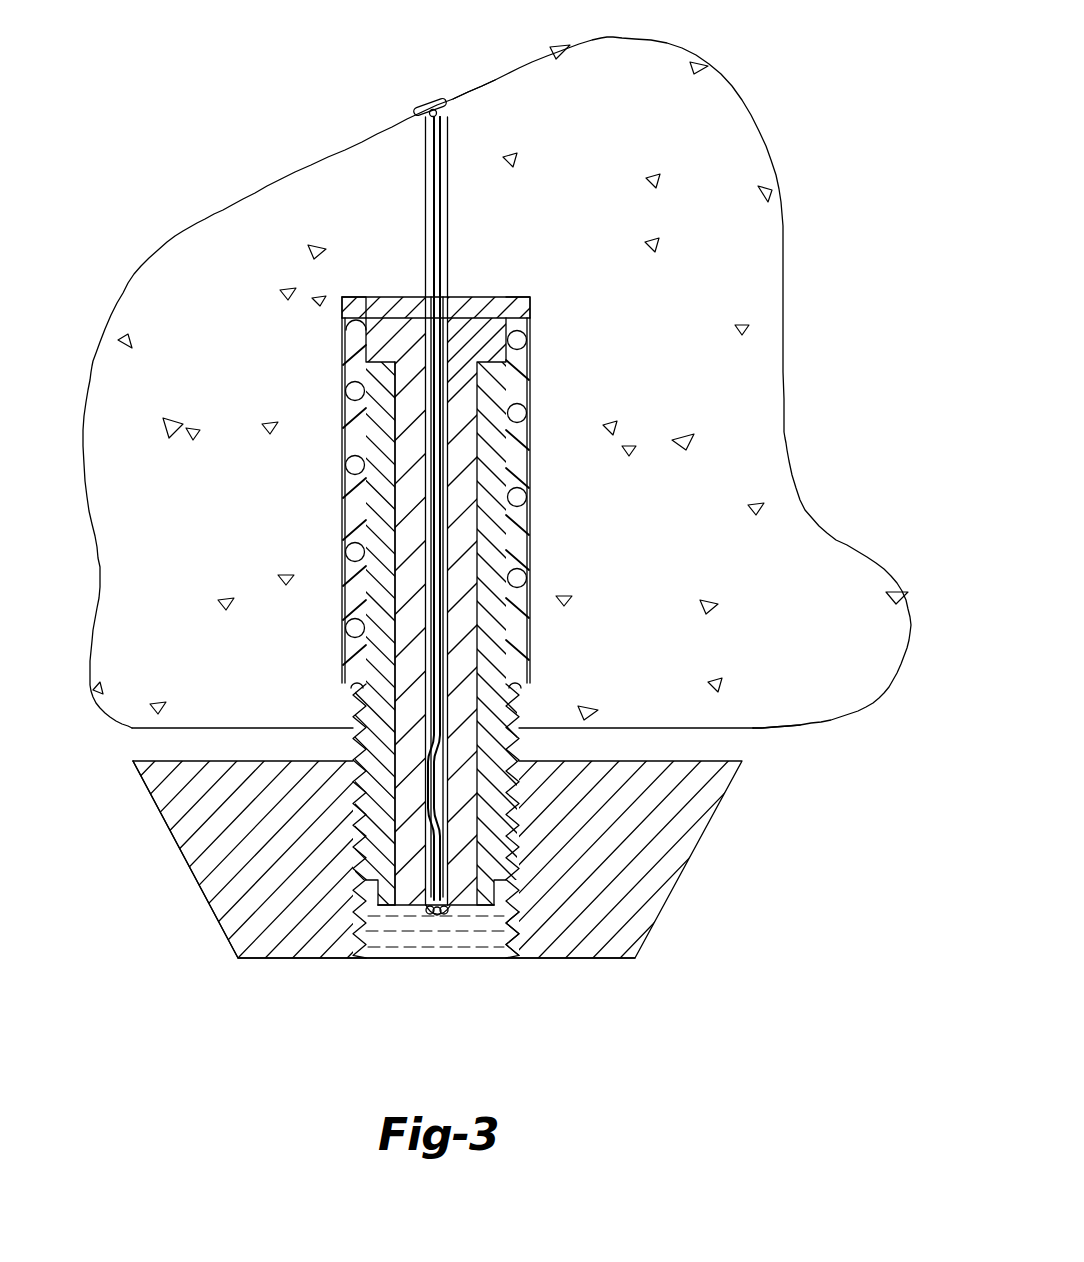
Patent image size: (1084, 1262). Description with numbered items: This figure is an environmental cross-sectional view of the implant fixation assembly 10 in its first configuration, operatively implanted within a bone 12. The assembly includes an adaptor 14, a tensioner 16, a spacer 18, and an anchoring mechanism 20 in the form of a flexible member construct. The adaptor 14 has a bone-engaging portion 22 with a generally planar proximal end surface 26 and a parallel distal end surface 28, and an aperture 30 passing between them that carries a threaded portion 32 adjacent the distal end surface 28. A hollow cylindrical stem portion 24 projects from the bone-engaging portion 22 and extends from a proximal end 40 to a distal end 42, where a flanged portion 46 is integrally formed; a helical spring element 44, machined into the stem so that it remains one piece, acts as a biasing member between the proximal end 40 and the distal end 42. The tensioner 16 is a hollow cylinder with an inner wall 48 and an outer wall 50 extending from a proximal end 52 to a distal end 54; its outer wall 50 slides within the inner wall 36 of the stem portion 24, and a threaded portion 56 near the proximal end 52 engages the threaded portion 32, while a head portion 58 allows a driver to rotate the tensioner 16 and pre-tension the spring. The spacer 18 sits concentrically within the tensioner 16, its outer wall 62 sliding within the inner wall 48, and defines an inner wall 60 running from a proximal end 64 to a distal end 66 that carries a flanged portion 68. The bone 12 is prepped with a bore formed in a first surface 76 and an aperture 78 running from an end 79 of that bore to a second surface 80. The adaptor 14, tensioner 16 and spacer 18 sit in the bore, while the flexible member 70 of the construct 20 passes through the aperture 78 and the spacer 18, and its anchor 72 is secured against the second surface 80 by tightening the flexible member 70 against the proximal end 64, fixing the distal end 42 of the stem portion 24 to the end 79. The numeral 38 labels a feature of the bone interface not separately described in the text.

The implant fixation assembly 10 is at (522, 521).
The bone 12 is at (200, 238).
The adaptor 14 is at (405, 890).
The tensioner 16 is at (522, 633).
The spacer 18 is at (518, 610).
The anchoring mechanism 20 is at (409, 518).
The bone-engaging portion 22 is at (205, 875).
The stem portion 24 is at (350, 698).
The proximal end surface 26 is at (270, 960).
The distal end surface 28 is at (188, 760).
The aperture 30 is at (480, 944).
The threaded portion 32 is at (517, 920).
The inner wall 36 is at (527, 700).
The right plate portion 38 is at (530, 756).
The proximal end 40 is at (345, 758).
The distal end 42 is at (341, 300).
The helical spring element 44 is at (485, 500).
The flanged portion 46 is at (366, 305).
The inner wall 48 is at (483, 382).
The outer wall 50 is at (524, 491).
The proximal end 52 is at (372, 903).
The distal end 54 is at (368, 383).
The threaded portion 56 is at (492, 906).
The head portion 58 is at (386, 906).
The inner wall 60 is at (420, 520).
The outer wall 62 is at (396, 484).
The proximal end 64 is at (447, 912).
The distal end 66 is at (396, 262).
The flanged portion 68 is at (500, 333).
The flexible member 70 is at (494, 495).
The anchor 72 is at (430, 100).
The first surface 76 is at (752, 730).
The aperture 78 is at (448, 135).
The end 79 is at (493, 297).
The second surface 80 is at (476, 85).